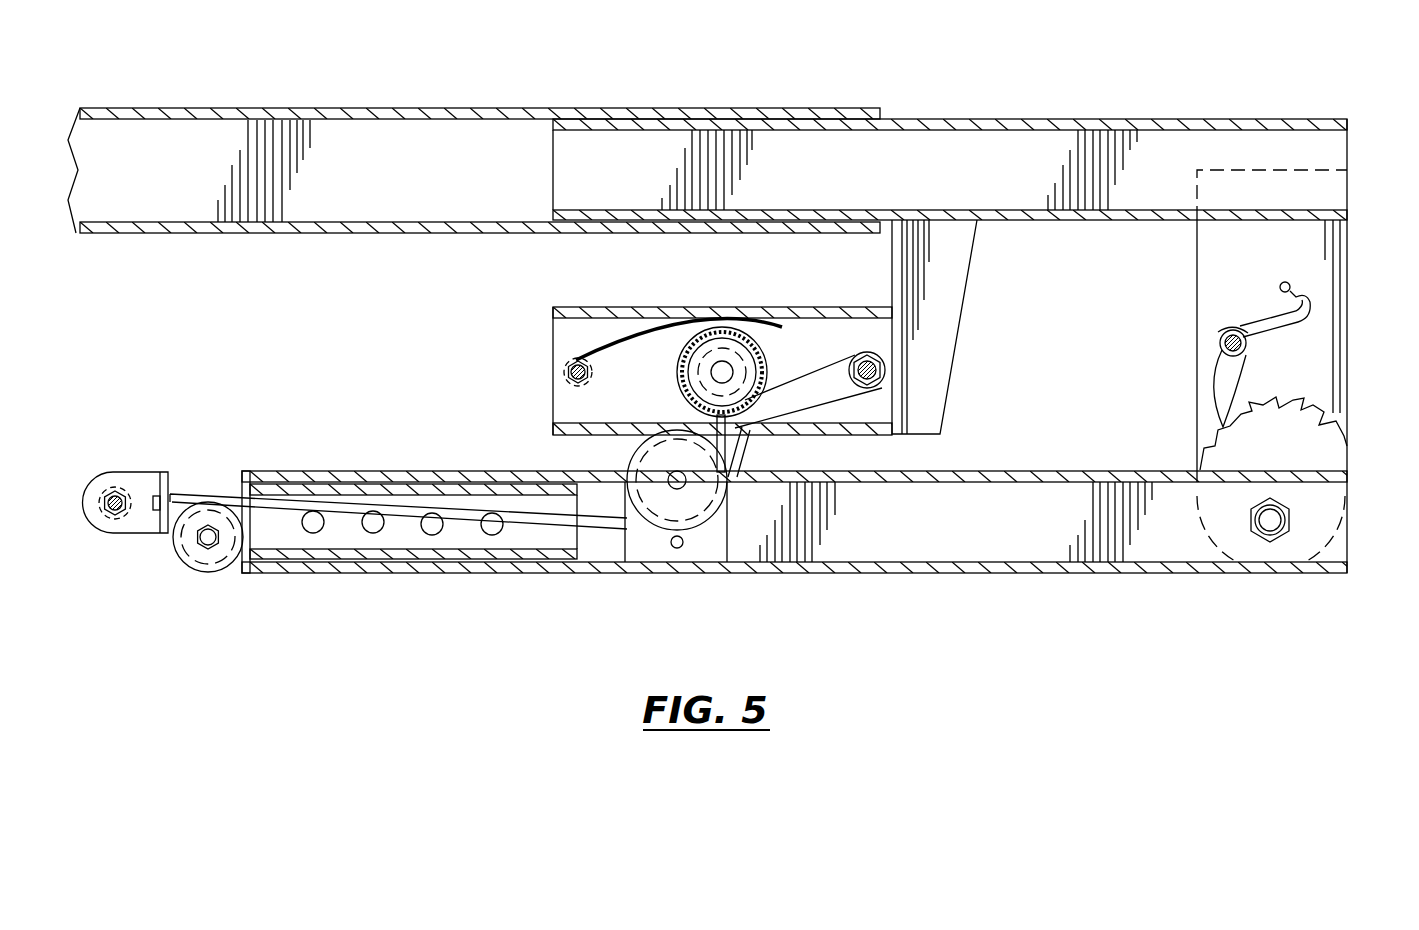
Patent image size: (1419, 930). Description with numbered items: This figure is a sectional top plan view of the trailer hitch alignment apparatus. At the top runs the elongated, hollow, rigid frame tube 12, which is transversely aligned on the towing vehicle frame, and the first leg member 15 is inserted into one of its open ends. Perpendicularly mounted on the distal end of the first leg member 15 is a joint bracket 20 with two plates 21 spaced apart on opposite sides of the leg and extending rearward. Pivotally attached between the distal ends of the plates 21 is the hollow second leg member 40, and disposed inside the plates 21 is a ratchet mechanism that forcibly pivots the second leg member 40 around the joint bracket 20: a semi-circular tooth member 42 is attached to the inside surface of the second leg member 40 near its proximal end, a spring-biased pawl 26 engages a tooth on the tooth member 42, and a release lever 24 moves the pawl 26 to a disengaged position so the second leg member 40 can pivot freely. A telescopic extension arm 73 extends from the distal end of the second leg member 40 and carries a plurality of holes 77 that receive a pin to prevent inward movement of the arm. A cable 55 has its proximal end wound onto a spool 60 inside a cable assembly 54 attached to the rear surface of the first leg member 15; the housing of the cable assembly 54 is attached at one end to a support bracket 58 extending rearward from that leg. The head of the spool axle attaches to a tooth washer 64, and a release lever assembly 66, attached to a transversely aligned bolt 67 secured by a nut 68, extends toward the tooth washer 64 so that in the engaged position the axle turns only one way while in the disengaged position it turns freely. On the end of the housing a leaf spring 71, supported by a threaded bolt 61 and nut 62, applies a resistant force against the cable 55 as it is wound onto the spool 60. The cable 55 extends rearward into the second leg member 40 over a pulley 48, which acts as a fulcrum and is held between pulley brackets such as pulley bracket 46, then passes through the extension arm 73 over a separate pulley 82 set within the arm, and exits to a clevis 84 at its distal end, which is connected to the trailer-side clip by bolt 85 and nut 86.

The frame tube 12 is at (248, 108).
The first leg member 15 is at (1022, 120).
The joint bracket 20 is at (1224, 272).
The plates 21 is at (1218, 308).
The release lever 24 is at (1290, 330).
The pawl 26 is at (1222, 378).
The second leg member 40 is at (1033, 469).
The tooth member 42 is at (1318, 440).
The pulley bracket 46 is at (705, 525).
The pulley 48 is at (638, 460).
The cable assembly 54 is at (560, 335).
The cable 55 is at (740, 440).
The support bracket 58 is at (940, 276).
The spool 60 is at (690, 395).
The threaded bolt 61 is at (567, 372).
The nut 62 is at (578, 386).
The tooth washer 64 is at (690, 366).
The release lever assembly 66 is at (815, 378).
The bolt 67 is at (880, 360).
The nut 68 is at (880, 380).
The leaf spring 71 is at (650, 330).
The extension arm 73 is at (240, 492).
The holes 77 is at (373, 535).
The pulley 82 is at (208, 570).
The clevis 84 is at (110, 460).
The bolt 85 is at (115, 515).
The nut 86 is at (115, 490).